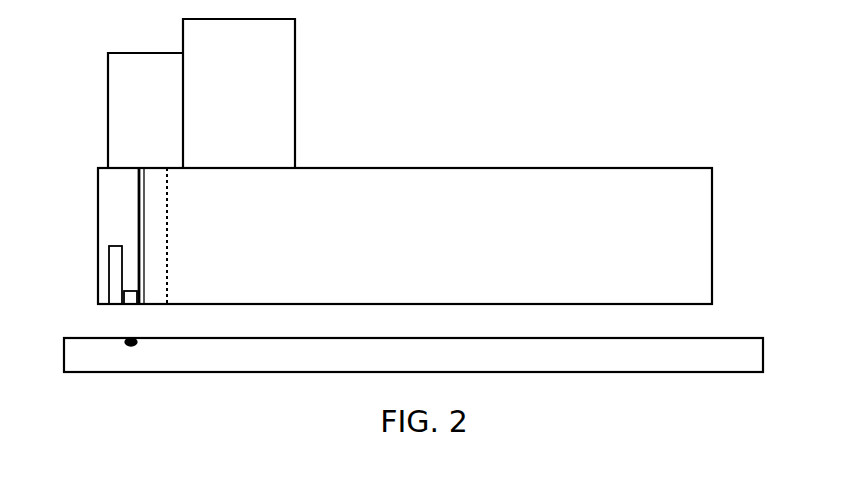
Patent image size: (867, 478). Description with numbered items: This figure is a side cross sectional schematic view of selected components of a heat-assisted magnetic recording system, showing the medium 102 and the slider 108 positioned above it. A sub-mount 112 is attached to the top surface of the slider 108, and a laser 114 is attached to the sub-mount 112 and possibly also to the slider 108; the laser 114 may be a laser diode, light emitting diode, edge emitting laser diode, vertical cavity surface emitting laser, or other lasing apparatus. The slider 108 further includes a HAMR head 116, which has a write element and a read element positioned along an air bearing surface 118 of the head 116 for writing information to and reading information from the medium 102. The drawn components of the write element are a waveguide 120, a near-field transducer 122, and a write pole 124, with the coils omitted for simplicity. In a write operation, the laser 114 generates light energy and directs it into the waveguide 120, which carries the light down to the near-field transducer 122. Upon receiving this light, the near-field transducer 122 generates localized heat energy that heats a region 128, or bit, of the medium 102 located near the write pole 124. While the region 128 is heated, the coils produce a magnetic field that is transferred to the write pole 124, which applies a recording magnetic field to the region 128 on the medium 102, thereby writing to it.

The medium 102 is at (735, 338).
The slider 108 is at (432, 168).
The sub-mount 112 is at (295, 90).
The laser 114 is at (108, 118).
The HAMR head 116 is at (155, 231).
The air bearing surface 118 is at (104, 306).
The waveguide 120 is at (144, 216).
The near-field transducer 122 is at (137, 291).
The write pole 124 is at (109, 278).
The region 128 is at (136, 339).